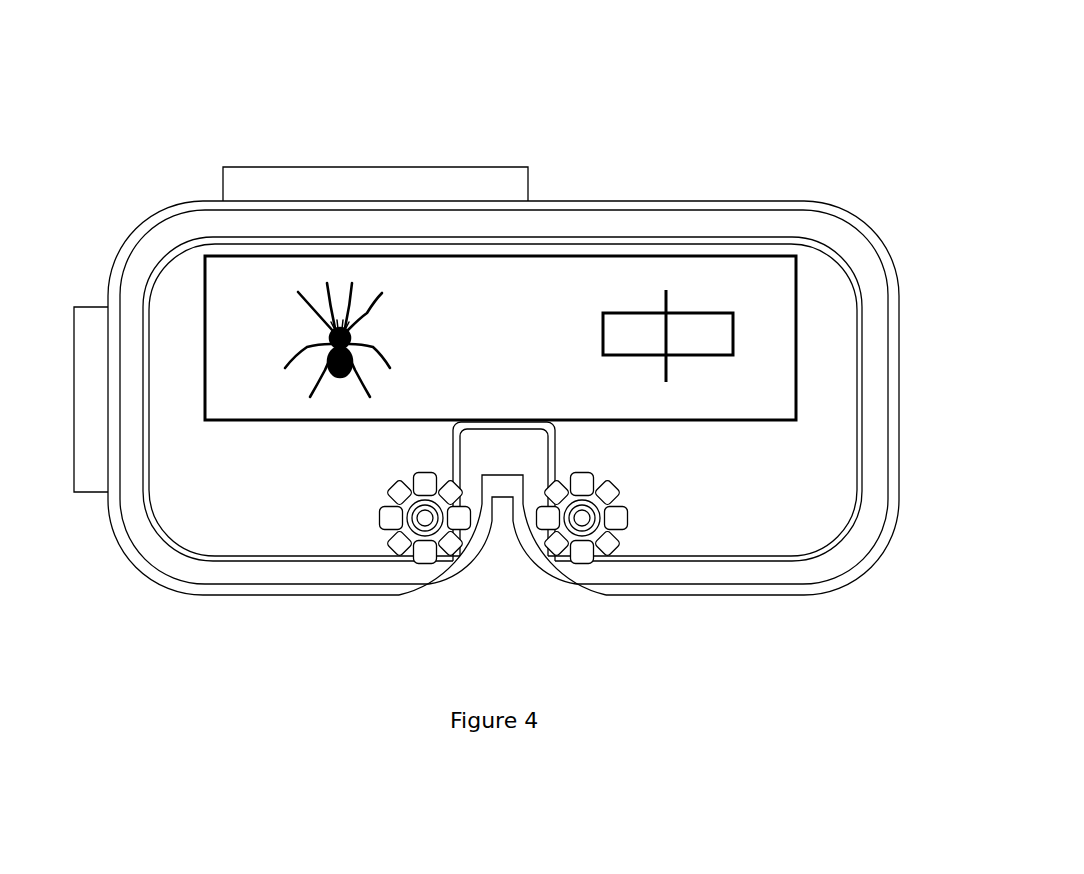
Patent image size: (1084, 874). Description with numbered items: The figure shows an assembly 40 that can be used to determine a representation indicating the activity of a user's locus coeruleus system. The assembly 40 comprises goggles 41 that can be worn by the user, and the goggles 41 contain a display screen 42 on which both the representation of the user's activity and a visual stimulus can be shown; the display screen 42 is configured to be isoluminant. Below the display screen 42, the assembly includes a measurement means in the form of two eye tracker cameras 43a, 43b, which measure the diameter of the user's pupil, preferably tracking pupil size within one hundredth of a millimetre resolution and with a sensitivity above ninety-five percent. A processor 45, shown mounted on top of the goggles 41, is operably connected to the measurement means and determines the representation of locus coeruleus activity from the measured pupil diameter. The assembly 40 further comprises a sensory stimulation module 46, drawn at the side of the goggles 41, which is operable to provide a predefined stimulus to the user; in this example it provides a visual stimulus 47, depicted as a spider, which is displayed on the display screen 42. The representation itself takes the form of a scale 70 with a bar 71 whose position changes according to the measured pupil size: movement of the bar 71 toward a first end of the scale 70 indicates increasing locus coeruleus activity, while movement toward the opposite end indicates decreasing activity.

The assembly 40 is at (628, 155).
The goggles 41 is at (894, 325).
The display screen 42 is at (757, 493).
The eye tracker camera 43a is at (426, 519).
The eye tracker camera 43b is at (583, 519).
The processor 45 is at (424, 190).
The sensory stimulation module 46 is at (97, 463).
The visual stimulus 47 is at (328, 327).
The scale 70 is at (723, 325).
The bar 71 is at (668, 290).